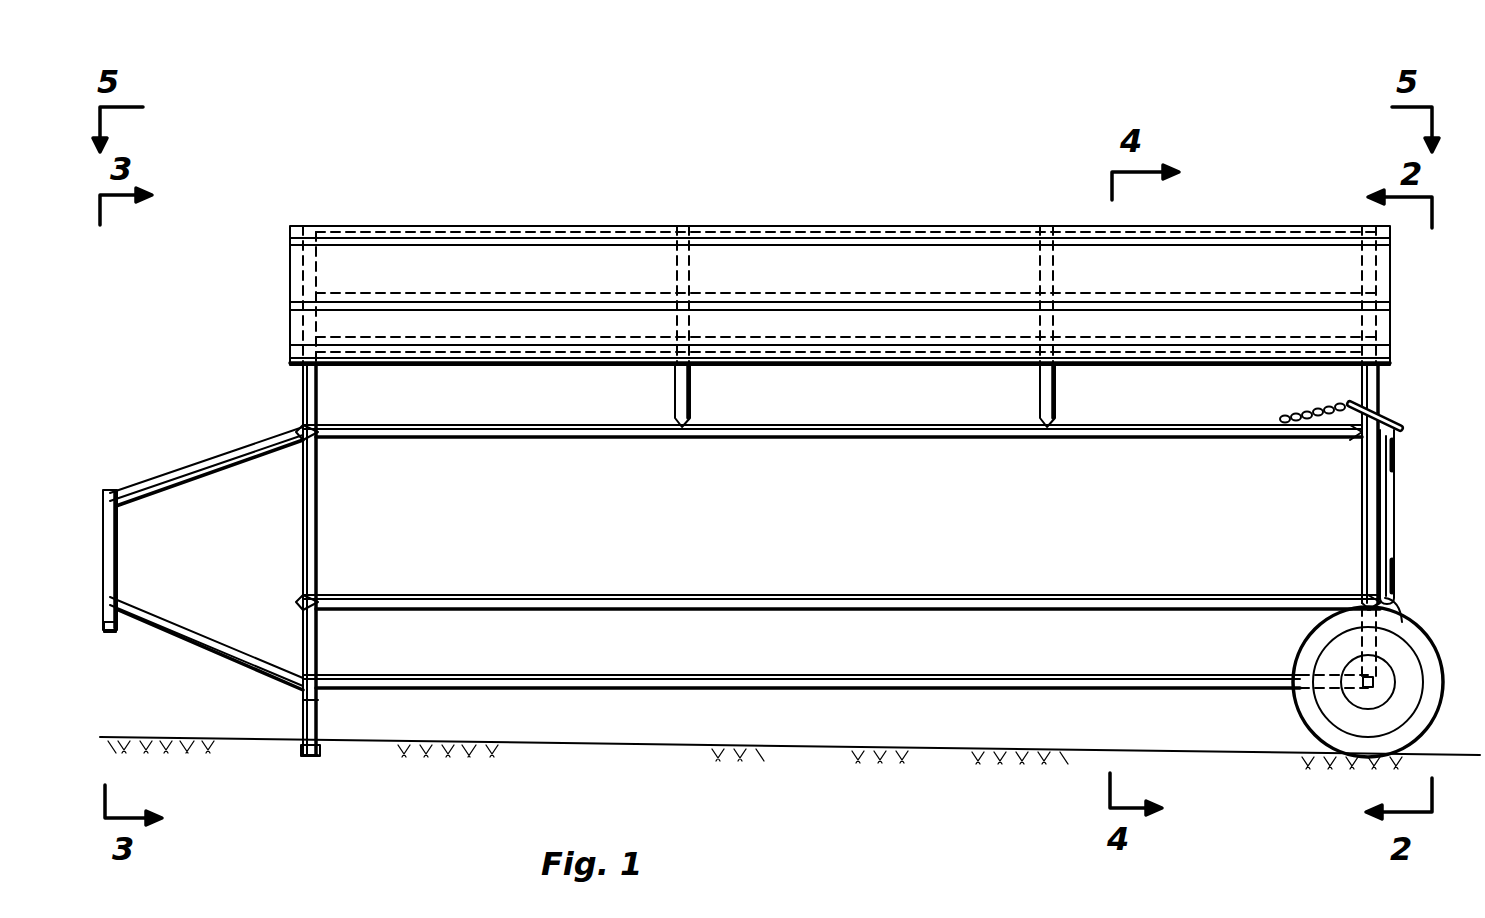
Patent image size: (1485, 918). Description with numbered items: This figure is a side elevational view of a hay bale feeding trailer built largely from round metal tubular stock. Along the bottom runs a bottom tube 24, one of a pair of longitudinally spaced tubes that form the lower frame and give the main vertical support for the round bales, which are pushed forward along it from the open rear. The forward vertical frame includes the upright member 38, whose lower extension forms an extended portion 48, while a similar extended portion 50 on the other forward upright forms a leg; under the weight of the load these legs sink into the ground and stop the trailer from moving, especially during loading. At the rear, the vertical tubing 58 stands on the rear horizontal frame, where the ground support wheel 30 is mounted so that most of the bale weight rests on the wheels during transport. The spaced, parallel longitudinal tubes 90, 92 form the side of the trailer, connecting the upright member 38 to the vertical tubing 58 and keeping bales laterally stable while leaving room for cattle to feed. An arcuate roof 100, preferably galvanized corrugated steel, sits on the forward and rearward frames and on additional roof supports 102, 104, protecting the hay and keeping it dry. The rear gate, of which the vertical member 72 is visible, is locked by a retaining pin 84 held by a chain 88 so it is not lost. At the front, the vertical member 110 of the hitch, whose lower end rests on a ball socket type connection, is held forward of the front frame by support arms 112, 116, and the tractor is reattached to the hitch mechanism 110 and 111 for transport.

The arcuate roof 100 is at (585, 224).
The upright member 38 is at (312, 545).
The roof support 104 is at (682, 420).
The roof support 102 is at (1048, 420).
The vertical tubing 58 is at (1380, 385).
The longitudinal tube 92 is at (872, 437).
The longitudinal tube 90 is at (862, 595).
The bottom tube 24 is at (692, 678).
The vertical member 110 is at (112, 550).
The support arm 112 is at (225, 456).
The support arm 116 is at (205, 638).
The hitch mechanism 111 is at (112, 632).
The extended portion 50 is at (303, 725).
The extended portion 48 is at (303, 752).
The vertical member 72 is at (1395, 490).
The retaining pin 84 is at (1398, 426).
The chain 88 is at (1282, 417).
The ground support wheel 30 is at (1412, 636).